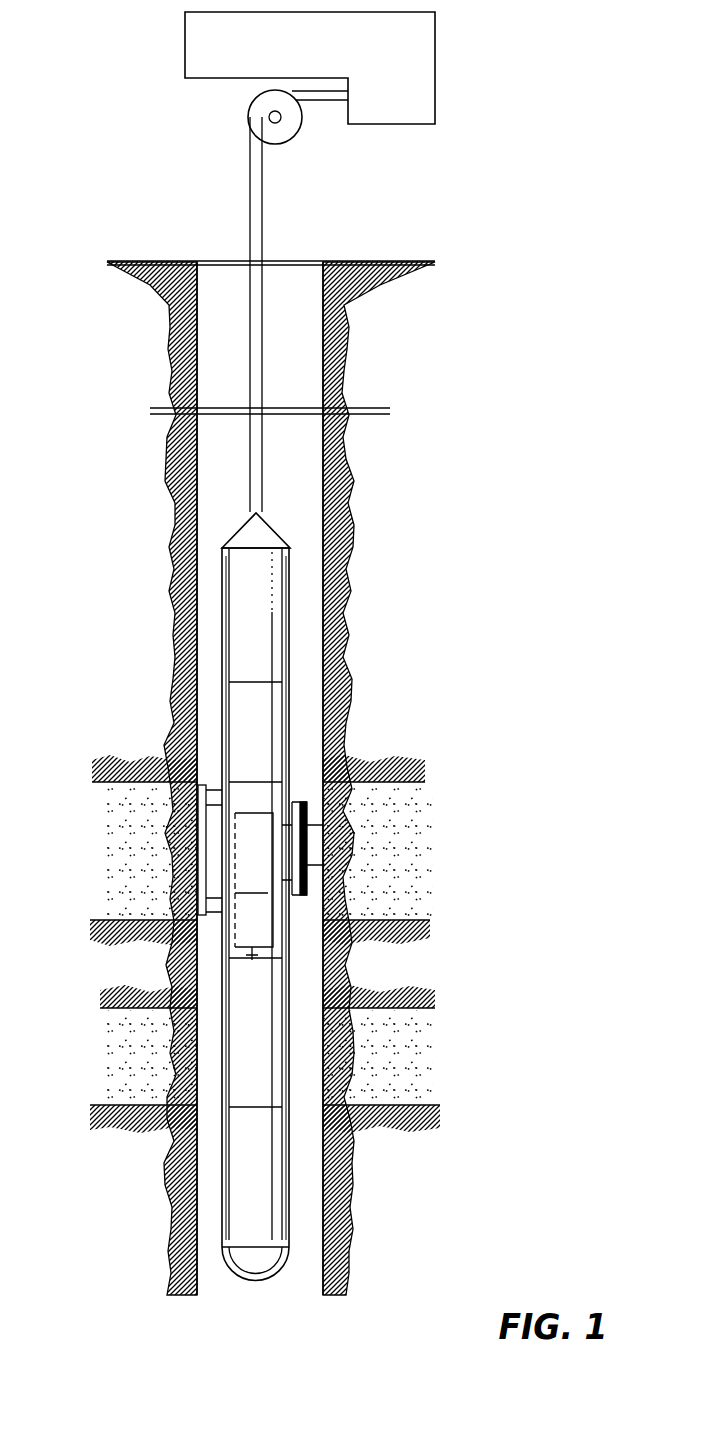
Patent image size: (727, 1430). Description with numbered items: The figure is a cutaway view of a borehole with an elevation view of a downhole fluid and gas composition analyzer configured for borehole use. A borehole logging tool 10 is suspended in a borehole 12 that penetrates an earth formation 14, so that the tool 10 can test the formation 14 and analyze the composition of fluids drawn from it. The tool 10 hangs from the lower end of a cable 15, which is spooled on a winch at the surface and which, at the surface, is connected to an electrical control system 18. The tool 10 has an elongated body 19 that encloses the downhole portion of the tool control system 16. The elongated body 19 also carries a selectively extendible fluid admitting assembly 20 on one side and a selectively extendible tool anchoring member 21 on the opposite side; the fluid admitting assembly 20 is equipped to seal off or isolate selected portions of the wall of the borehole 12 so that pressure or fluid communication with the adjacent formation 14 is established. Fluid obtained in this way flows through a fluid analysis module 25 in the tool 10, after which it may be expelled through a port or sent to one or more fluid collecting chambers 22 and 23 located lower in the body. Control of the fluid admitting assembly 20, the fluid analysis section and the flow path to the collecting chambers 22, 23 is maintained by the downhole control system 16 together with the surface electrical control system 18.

The borehole logging tool 10 is at (299, 712).
The borehole 12 is at (322, 336).
The formation 14 is at (396, 828).
The cable 15 is at (250, 168).
The tool control system 16 is at (255, 732).
The electrical control system 18 is at (398, 124).
The elongated body 19 is at (268, 587).
The fluid admitting assembly 20 is at (307, 813).
The tool anchoring member 21 is at (198, 835).
The fluid collecting chamber 22 is at (255, 1032).
The fluid collecting chamber 23 is at (255, 1177).
The fluid analysis module 25 is at (280, 927).